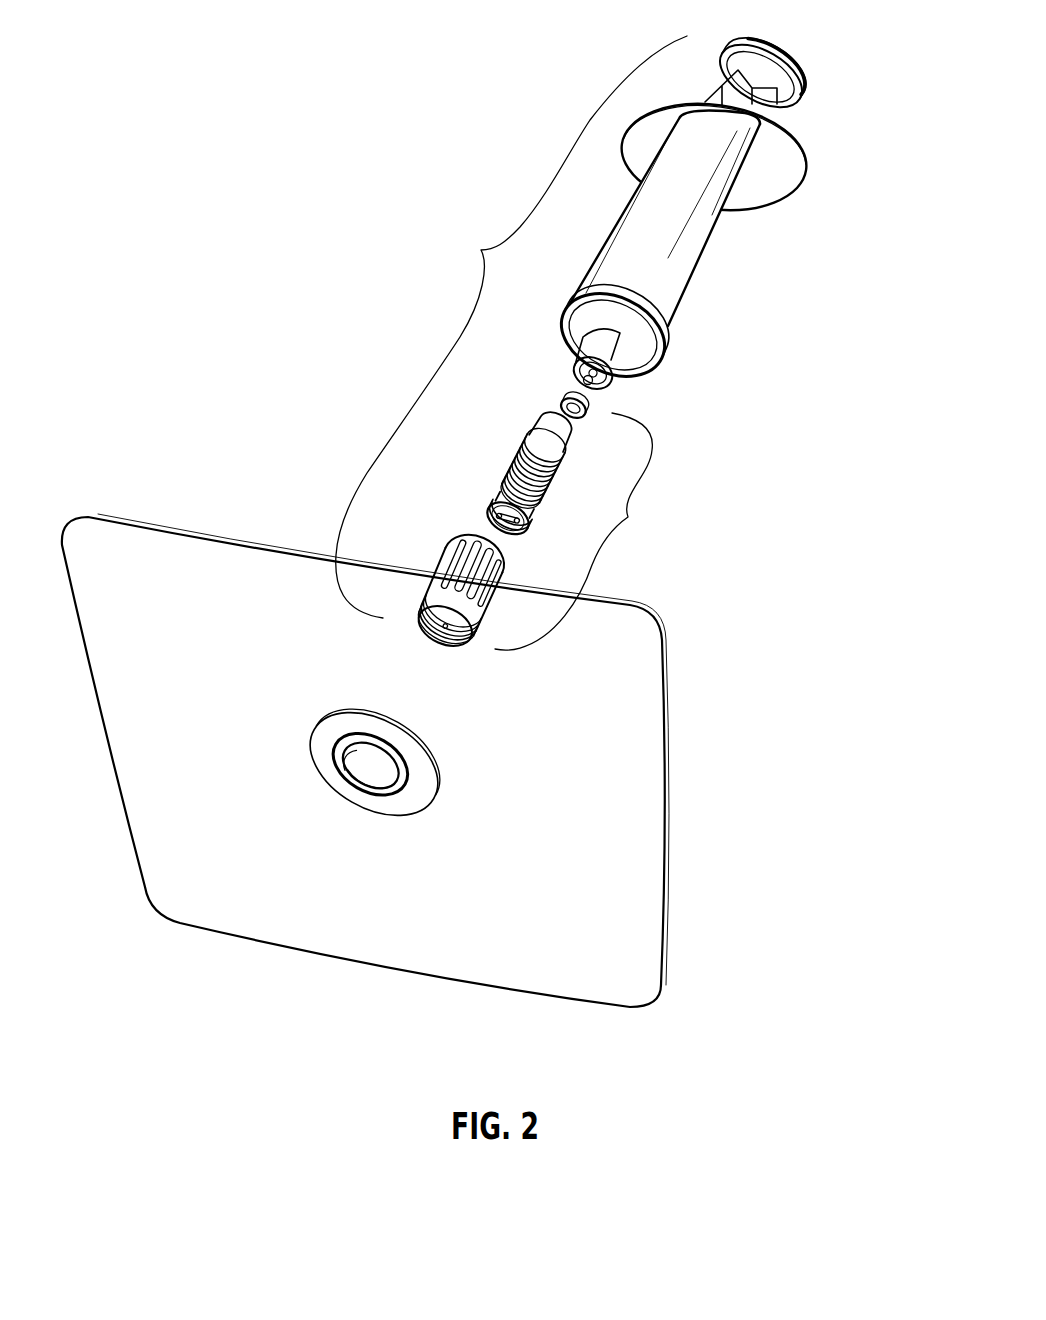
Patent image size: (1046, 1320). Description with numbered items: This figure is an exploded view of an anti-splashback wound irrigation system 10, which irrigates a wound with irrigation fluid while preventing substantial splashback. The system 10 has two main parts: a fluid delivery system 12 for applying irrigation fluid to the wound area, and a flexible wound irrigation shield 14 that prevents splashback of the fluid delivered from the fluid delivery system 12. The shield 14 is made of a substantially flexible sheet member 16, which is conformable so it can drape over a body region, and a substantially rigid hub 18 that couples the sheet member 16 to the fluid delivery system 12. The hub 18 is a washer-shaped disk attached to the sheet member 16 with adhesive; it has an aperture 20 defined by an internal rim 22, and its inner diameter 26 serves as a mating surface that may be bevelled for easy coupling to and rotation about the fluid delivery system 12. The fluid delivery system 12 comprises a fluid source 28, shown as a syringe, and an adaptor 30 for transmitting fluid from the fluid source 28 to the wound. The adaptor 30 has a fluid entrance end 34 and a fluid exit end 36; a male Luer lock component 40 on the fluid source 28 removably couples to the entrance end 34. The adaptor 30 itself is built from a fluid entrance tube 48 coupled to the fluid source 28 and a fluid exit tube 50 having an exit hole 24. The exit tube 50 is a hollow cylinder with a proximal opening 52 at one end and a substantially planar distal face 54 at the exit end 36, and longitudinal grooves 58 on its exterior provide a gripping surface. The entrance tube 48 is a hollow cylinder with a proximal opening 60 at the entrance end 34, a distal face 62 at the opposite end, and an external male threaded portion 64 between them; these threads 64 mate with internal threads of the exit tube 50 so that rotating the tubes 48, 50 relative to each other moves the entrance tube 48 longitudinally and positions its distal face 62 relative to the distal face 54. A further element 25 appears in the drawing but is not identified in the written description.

The anti-splashback wound irrigation system 10 is at (794, 316).
The fluid delivery system 12 is at (481, 250).
The flexible wound irrigation shield 14 is at (683, 605).
The flexible sheet member 16 is at (413, 928).
The hub 18 is at (410, 800).
The aperture 20 is at (355, 757).
The internal rim 22 is at (408, 769).
The exit hole 24 is at (443, 630).
The luer tip 25 is at (589, 396).
The inner diameter 26 is at (357, 786).
The fluid source 28 is at (591, 231).
The adaptor 30 is at (628, 517).
The fluid entrance end 34 is at (550, 394).
The fluid exit end 36 is at (466, 652).
The male Luer lock component 40 is at (599, 341).
The fluid entrance tube 48 is at (530, 405).
The fluid exit tube 50 is at (463, 512).
The proximal opening 52 is at (512, 556).
The distal face 54 is at (418, 640).
The longitudinal grooves 58 is at (463, 565).
The proximal opening 60 is at (608, 394).
The distal face 62 is at (495, 517).
The external male threaded portion 64 is at (527, 450).